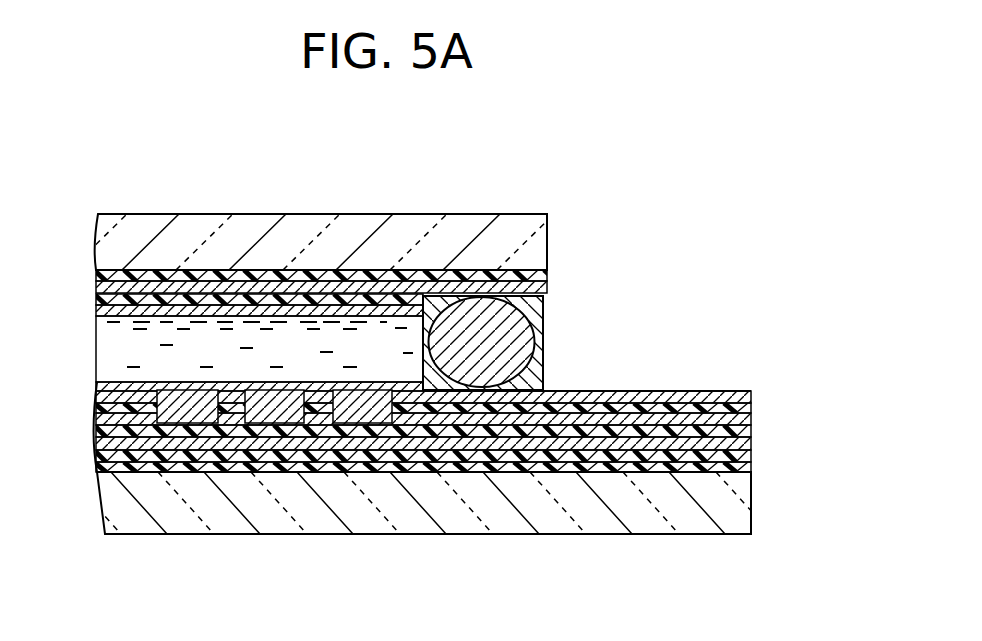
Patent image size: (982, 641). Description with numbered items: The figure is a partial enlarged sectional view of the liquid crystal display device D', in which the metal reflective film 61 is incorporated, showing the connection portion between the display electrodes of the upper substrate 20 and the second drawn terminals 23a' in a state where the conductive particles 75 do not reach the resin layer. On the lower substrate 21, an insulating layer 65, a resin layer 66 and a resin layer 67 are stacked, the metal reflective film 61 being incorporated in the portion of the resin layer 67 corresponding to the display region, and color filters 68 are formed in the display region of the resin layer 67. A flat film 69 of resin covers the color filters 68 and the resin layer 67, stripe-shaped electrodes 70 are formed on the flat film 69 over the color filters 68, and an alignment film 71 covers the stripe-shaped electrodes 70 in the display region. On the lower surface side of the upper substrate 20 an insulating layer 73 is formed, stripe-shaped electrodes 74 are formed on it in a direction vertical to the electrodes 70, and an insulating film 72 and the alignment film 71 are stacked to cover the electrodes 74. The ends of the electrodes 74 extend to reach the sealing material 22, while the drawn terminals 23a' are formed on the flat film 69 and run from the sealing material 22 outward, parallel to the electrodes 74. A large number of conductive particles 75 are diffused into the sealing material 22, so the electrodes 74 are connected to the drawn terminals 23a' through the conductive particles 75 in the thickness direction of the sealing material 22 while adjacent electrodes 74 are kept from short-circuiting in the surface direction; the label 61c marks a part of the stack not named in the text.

The substrate 20 is at (460, 240).
The insulating layer 73 is at (533, 276).
The stripe-shaped electrodes 74 is at (540, 290).
The alignment film 71 is at (97, 312).
The insulating film 72 is at (113, 302).
The sealing material 22 is at (536, 307).
The conductive particles 75 is at (481, 346).
The second drawn terminals 23a' is at (470, 394).
The flat film 69 is at (750, 415).
The metal reflective film 61 is at (117, 443).
The resin layer 67 is at (750, 437).
The gate electrode 61c is at (654, 437).
The resin layer 66 is at (750, 455).
The insulating layer 65 is at (750, 470).
The color filters 68 is at (178, 396).
The stripe-shaped electrodes 70 is at (297, 404).
The substrate 21 is at (558, 515).
The liquid crystal display device D' is at (616, 144).